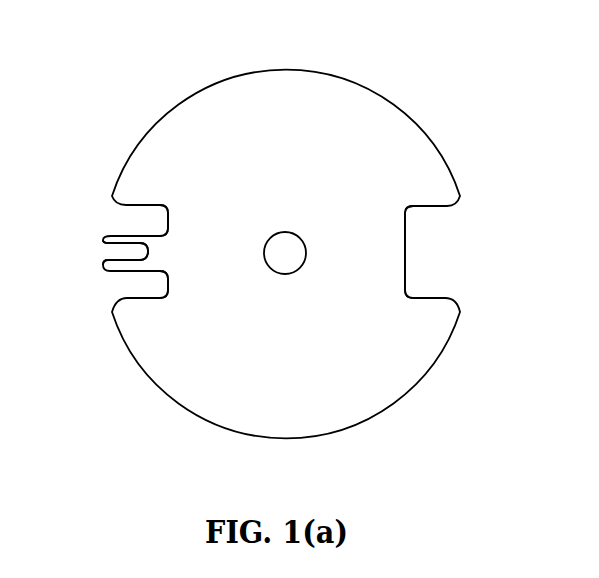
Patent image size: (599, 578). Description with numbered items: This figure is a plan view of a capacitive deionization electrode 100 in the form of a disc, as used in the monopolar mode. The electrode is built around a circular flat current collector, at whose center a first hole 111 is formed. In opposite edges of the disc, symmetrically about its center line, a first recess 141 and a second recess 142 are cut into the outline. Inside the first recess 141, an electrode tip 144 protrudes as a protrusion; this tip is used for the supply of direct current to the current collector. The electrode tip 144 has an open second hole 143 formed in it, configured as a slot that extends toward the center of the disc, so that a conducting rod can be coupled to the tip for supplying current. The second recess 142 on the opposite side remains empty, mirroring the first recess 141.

The capacitive deionization electrode 100 is at (282, 62).
The first hole 111 is at (280, 253).
The first recess 141 is at (122, 300).
The second recess 142 is at (427, 258).
The second hole 143 is at (102, 253).
The electrode tip 144 is at (110, 236).